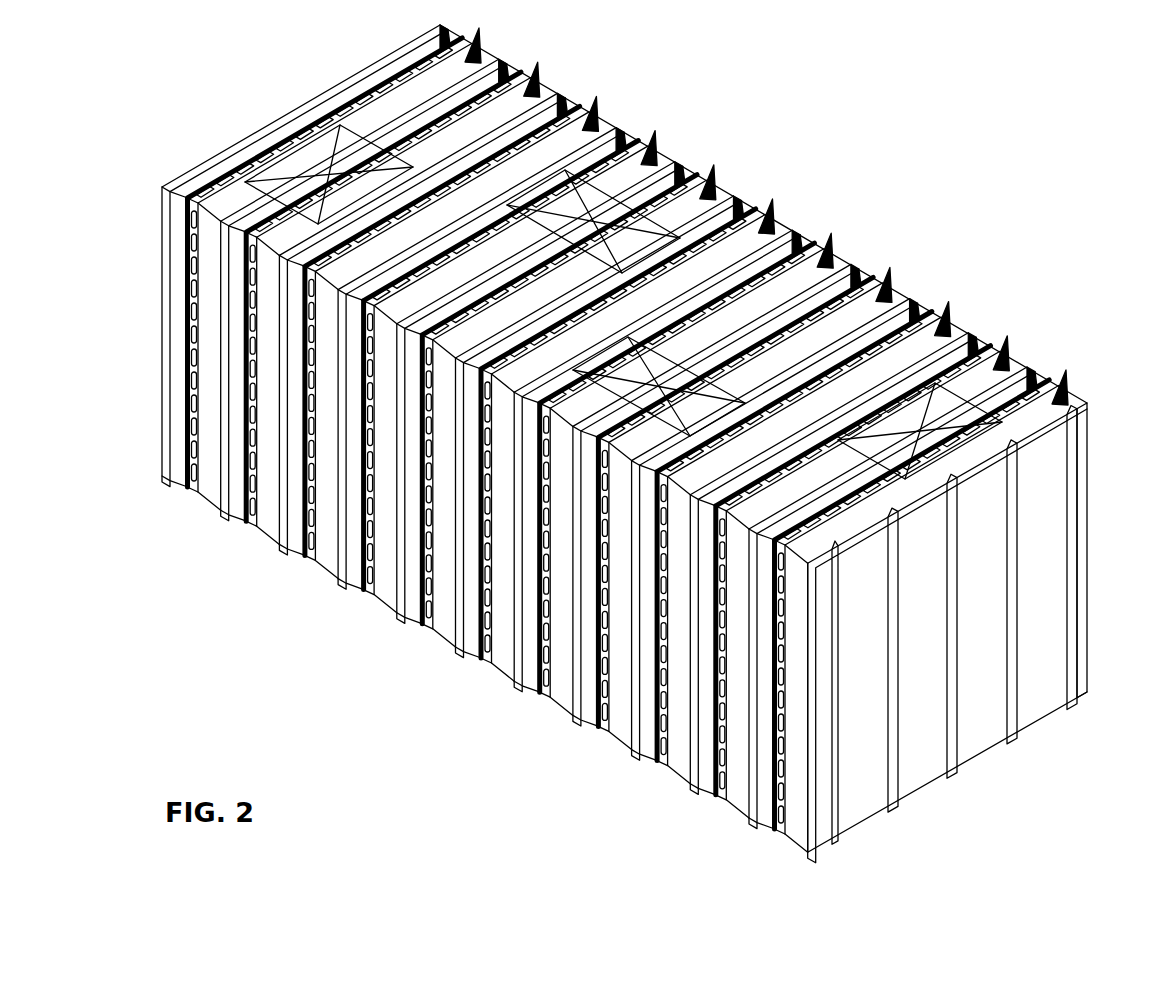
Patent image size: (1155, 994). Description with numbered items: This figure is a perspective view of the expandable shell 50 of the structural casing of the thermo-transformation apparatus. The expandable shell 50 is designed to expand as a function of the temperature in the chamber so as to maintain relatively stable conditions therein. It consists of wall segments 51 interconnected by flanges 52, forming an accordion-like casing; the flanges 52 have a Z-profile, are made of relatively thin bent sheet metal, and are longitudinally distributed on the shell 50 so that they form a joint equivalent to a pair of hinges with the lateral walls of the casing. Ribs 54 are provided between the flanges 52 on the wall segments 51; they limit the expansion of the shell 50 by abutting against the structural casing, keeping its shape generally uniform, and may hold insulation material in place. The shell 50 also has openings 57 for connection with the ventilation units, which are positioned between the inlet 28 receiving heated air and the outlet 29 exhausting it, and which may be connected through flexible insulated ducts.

The expandable shell 50 is at (811, 186).
The wall segments 51 is at (212, 497).
The flanges 52 is at (423, 618).
The ribs 54 is at (518, 673).
The openings 57 is at (613, 278).
The inlet 28 is at (612, 198).
The outlet 29 is at (272, 130).